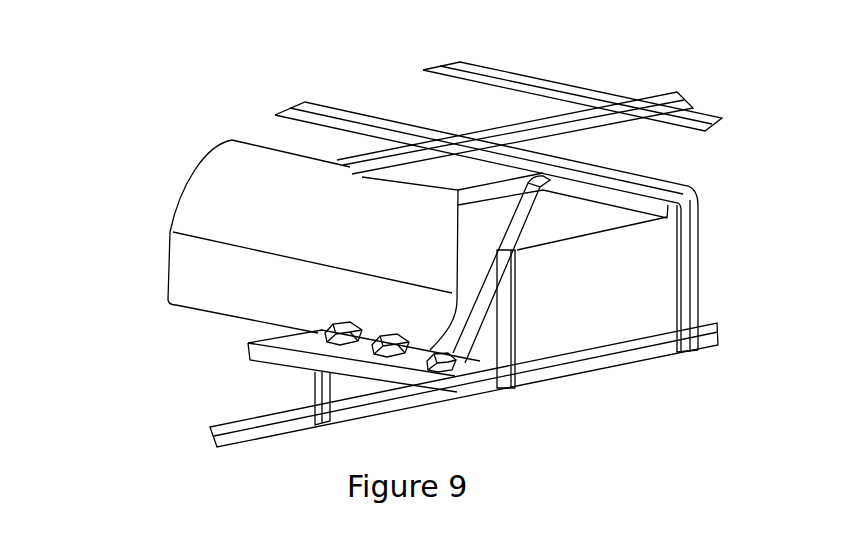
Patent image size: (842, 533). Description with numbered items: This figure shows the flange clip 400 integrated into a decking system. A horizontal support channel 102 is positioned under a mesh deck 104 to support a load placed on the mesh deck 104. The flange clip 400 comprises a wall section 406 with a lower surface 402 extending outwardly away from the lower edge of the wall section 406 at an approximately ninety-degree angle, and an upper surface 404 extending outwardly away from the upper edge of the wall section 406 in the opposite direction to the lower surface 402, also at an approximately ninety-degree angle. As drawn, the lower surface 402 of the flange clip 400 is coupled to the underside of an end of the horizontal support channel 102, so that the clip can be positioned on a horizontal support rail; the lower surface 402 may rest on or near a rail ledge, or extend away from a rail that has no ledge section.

The horizontal support channel 102 is at (200, 207).
The mesh deck 104 is at (543, 128).
The flange clip 400 is at (503, 277).
The lower surface 402 is at (322, 368).
The upper surface 404 is at (573, 218).
The wall section 406 is at (468, 295).